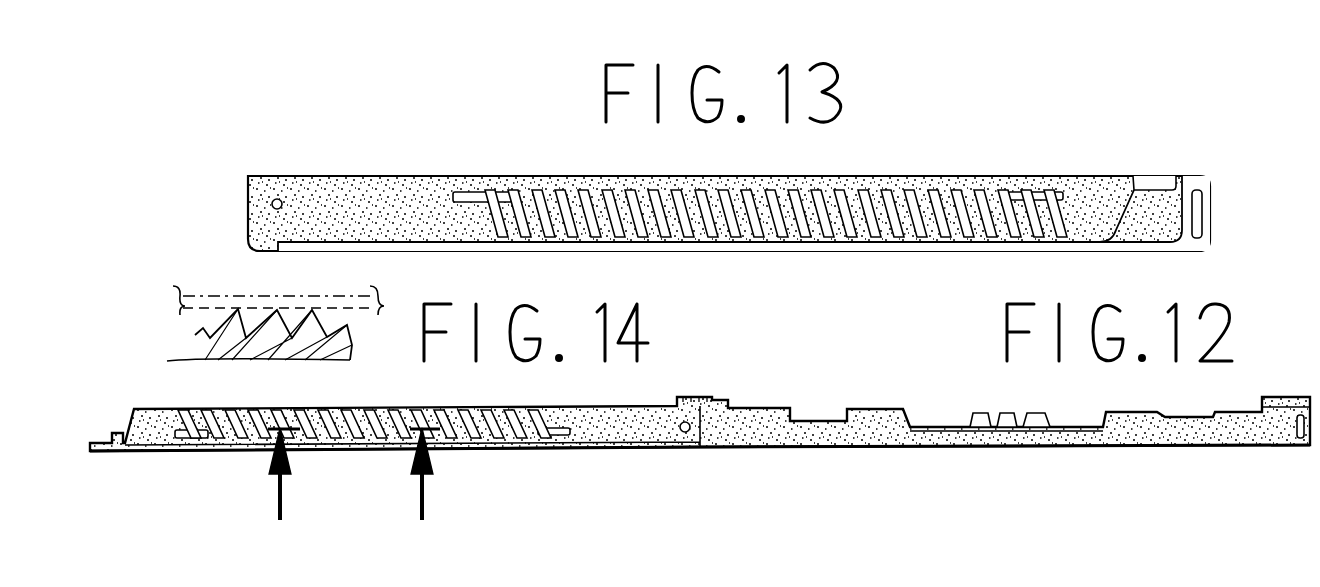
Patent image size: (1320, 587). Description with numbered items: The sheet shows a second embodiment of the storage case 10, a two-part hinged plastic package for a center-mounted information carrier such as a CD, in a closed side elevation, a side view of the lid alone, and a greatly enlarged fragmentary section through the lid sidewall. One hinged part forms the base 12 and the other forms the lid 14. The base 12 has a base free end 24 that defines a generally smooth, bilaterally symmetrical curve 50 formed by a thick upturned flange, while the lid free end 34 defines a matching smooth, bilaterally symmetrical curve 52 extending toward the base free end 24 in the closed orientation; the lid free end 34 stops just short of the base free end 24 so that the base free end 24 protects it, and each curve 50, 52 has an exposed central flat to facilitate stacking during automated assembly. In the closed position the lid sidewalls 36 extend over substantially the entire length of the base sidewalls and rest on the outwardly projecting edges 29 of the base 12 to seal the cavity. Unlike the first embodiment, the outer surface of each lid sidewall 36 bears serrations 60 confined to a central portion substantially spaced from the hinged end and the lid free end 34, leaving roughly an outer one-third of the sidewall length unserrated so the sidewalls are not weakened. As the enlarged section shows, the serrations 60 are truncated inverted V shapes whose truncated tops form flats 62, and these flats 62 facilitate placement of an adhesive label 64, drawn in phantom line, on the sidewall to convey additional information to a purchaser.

In FIG. 13, the case 10 is at (292, 168).
In FIG. 12, the case 10 is at (757, 452).
In FIG. 12, the base 12 is at (867, 404).
In FIG. 12, the lid 14 is at (648, 398).
In FIG. 13, the base free end 24 is at (1243, 165).
In FIG. 12, the base free end 24 is at (1318, 376).
In FIG. 13, the outwardly projecting edges 29 is at (817, 251).
In FIG. 12, the lid free end 34 is at (103, 443).
In FIG. 13, the lid sidewalls 36 is at (395, 207).
In FIG. 12, the lid sidewalls 36 is at (605, 432).
In FIG. 13, the curve 50 is at (1234, 185).
In FIG. 12, the curve 50 is at (1249, 406).
In FIG. 12, the curve 52 is at (92, 452).
In FIG. 13, the serrations 60 is at (610, 197).
In FIG. 14, the serrations 60 is at (200, 340).
In FIG. 12, the serrations 60 is at (372, 443).
In FIG. 14, the flats 62 is at (292, 338).
In FIG. 14, the adhesive label 64 is at (172, 296).